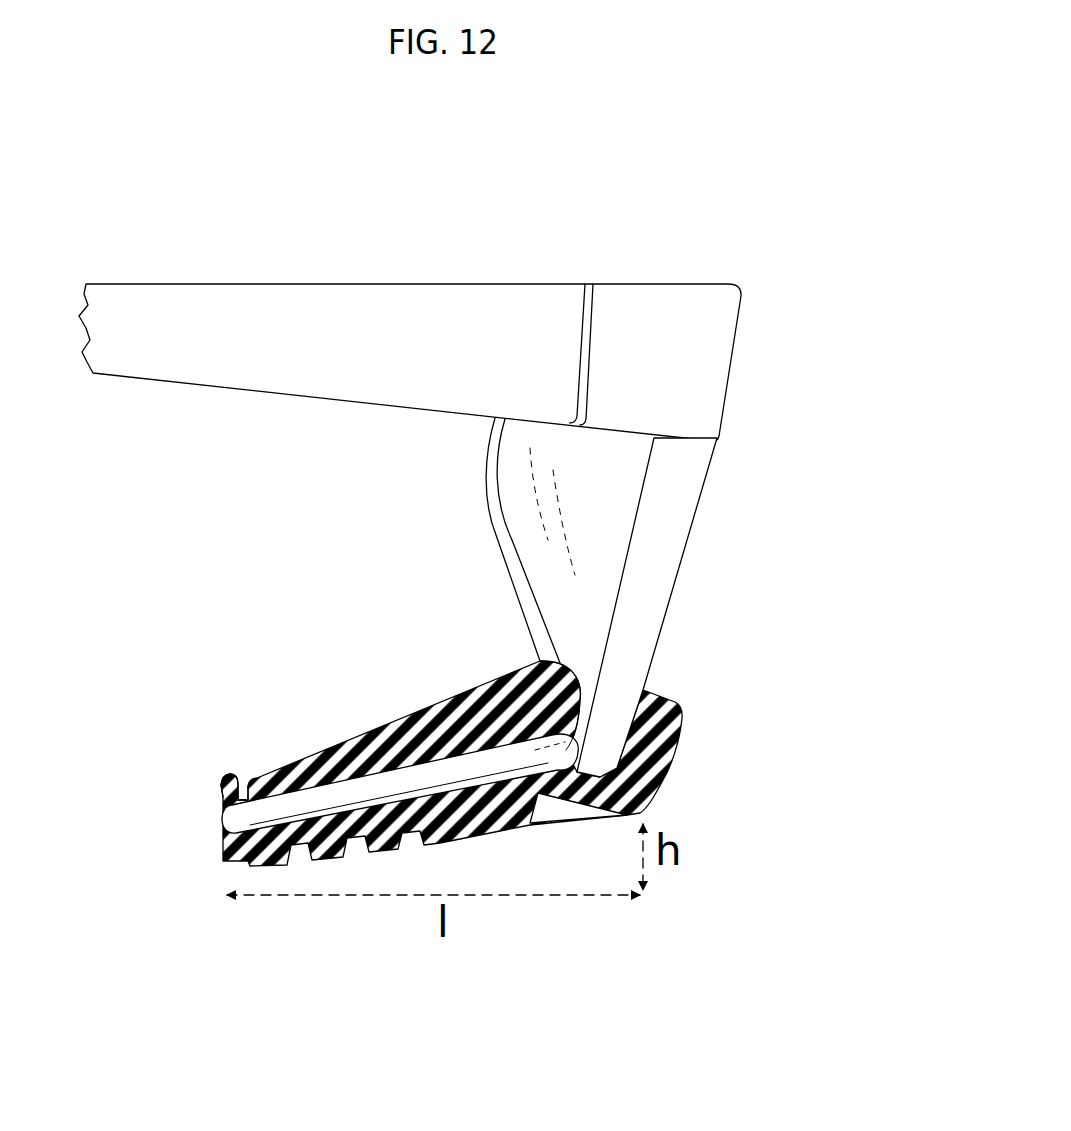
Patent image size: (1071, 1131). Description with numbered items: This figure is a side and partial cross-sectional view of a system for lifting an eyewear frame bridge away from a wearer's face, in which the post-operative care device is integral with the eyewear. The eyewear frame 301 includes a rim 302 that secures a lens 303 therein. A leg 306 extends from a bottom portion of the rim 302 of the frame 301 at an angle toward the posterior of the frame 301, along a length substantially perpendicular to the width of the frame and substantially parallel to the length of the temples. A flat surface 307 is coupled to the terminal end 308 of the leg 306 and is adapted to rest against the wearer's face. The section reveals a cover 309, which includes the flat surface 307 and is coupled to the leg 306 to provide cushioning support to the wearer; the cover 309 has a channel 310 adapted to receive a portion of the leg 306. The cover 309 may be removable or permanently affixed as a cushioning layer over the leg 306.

The frame 301 is at (848, 329).
The rim 302 is at (668, 535).
The lens 303 is at (581, 600).
The leg 306 is at (458, 776).
The flat surface 307 is at (218, 797).
The terminal end 308 is at (245, 797).
The cover 309 is at (415, 715).
The channel 310 is at (509, 757).